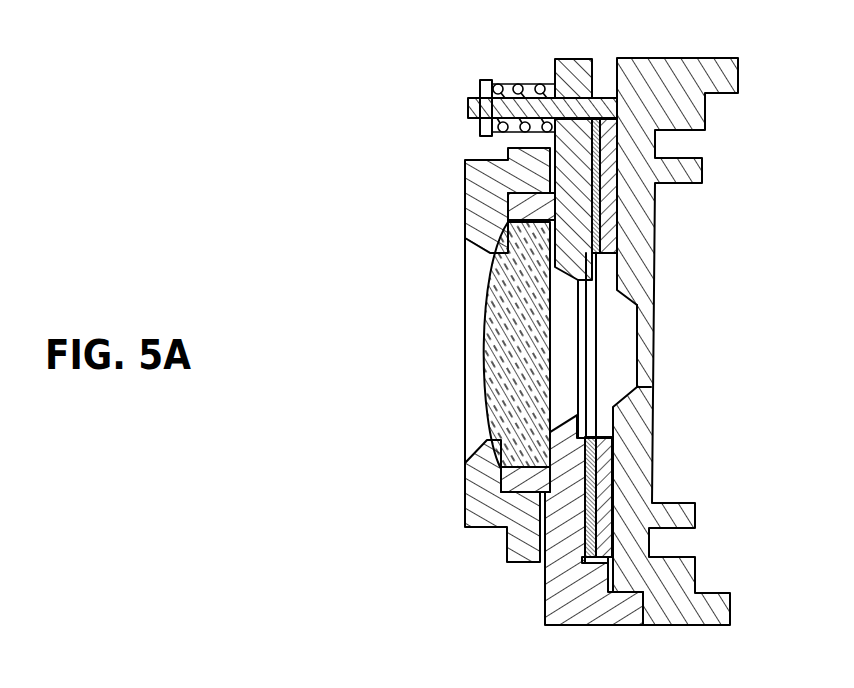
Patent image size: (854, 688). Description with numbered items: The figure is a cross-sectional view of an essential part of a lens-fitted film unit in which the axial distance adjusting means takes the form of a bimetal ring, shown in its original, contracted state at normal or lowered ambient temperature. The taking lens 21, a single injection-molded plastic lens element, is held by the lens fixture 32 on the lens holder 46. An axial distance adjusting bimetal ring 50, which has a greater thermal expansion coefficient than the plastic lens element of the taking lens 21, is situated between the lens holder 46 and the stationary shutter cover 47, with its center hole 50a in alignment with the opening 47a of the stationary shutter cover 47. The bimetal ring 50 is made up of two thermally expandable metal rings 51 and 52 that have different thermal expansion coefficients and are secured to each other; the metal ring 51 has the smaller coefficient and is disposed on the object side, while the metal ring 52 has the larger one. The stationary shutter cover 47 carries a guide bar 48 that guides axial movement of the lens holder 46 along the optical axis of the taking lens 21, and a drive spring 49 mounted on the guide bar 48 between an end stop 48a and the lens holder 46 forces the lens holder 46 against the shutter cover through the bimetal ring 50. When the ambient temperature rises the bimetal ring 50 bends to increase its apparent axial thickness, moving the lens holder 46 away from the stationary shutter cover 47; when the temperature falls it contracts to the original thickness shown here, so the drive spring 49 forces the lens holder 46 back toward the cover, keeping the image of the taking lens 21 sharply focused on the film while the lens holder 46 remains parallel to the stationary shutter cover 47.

The taking lens 21 is at (483, 323).
The lens fixture 32 is at (466, 199).
The lens holder 46 is at (577, 625).
The stationary shutter cover 47 is at (670, 624).
The opening of the stationary shutter cover 47a is at (623, 393).
The guide bar 48 is at (470, 107).
The end stop 48a is at (482, 82).
The drive spring 49 is at (518, 68).
The axial distance adjusting bimetal ring 50 is at (600, 112).
The center hole of the bimetal ring 50a is at (590, 435).
The metal ring 51 is at (545, 562).
The metal ring 52 is at (545, 598).